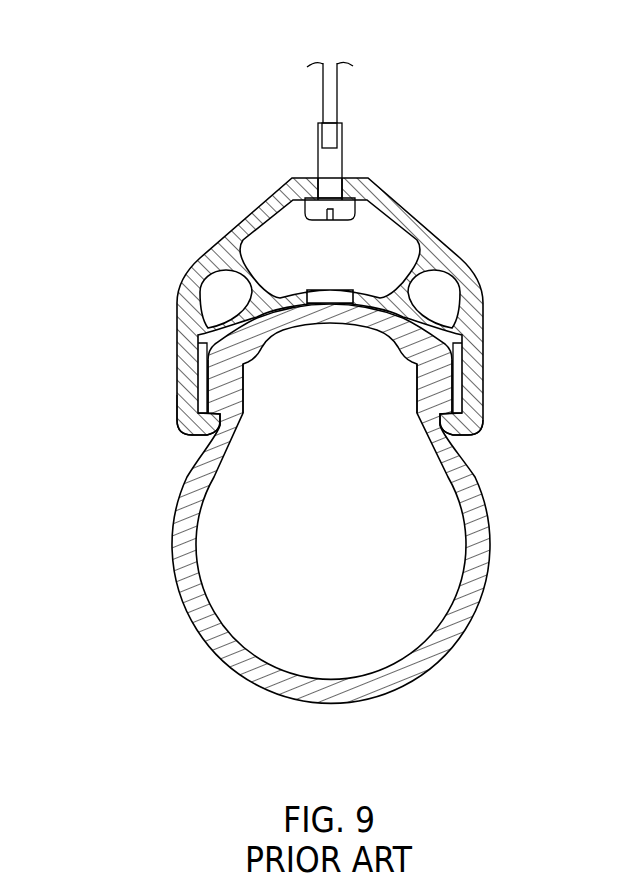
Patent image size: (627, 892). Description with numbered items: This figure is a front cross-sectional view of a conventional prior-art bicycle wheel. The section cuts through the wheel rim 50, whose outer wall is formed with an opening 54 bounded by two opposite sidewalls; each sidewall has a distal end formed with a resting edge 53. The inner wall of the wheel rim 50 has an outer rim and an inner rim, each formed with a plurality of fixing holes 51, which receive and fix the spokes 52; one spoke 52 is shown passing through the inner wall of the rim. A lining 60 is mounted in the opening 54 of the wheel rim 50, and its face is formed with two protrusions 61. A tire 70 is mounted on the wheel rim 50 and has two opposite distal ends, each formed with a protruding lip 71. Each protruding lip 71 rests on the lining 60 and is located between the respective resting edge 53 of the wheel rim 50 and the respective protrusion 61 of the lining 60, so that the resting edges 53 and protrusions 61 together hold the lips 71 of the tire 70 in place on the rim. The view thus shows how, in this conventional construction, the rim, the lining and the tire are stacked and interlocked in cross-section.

The wheel rim 50 is at (339, 292).
The fixing holes 51 is at (290, 179).
The spokes 52 is at (323, 108).
The resting edge 53 is at (452, 432).
The opening 54 is at (312, 349).
The lining 60 is at (303, 368).
The protrusions 61 is at (455, 337).
The tire 70 is at (297, 503).
The protruding lip 71 is at (430, 385).